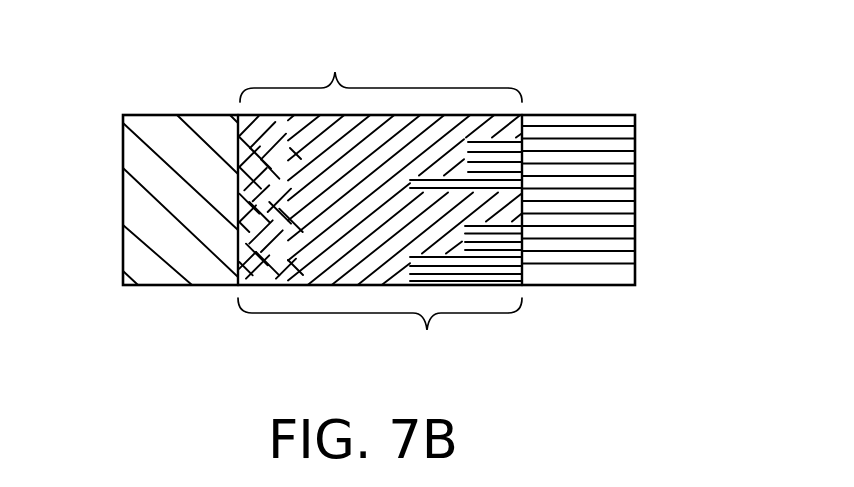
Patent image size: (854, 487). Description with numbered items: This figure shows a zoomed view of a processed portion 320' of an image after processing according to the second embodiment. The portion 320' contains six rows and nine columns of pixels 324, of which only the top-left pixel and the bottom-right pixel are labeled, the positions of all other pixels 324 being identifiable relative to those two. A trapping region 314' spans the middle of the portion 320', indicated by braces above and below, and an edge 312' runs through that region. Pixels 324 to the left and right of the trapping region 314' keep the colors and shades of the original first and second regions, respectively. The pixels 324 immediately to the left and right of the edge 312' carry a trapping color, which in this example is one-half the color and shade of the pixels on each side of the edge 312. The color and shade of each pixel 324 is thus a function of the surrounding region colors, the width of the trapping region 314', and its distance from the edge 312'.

The processed portion 320' is at (402, 169).
The pixel 324 is at (682, 297).
The edge 312 is at (370, 198).
The edge 312' is at (379, 238).
The trapping region 314' is at (380, 201).